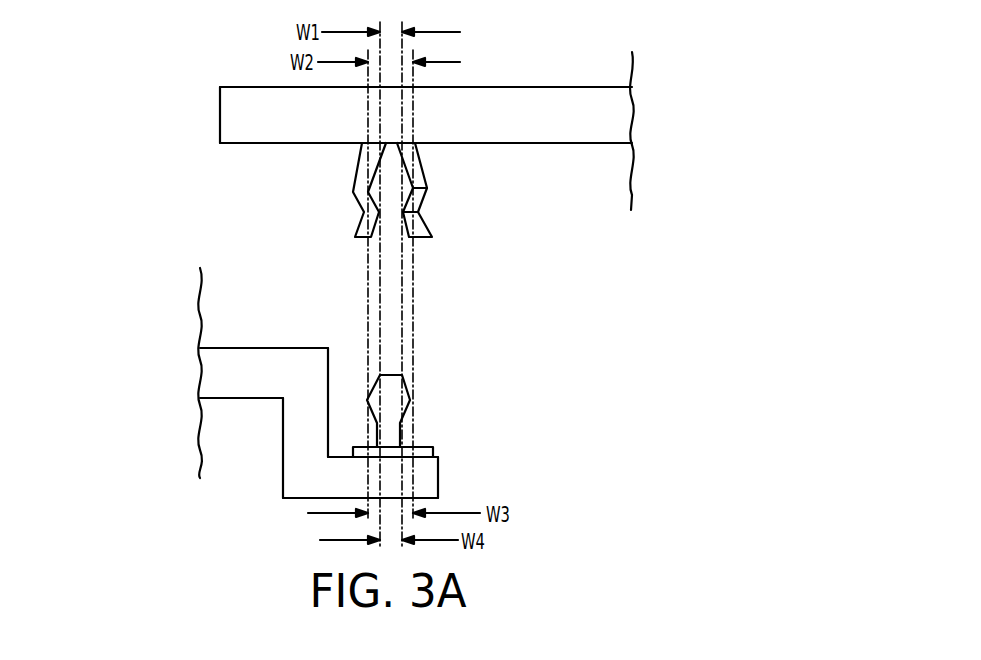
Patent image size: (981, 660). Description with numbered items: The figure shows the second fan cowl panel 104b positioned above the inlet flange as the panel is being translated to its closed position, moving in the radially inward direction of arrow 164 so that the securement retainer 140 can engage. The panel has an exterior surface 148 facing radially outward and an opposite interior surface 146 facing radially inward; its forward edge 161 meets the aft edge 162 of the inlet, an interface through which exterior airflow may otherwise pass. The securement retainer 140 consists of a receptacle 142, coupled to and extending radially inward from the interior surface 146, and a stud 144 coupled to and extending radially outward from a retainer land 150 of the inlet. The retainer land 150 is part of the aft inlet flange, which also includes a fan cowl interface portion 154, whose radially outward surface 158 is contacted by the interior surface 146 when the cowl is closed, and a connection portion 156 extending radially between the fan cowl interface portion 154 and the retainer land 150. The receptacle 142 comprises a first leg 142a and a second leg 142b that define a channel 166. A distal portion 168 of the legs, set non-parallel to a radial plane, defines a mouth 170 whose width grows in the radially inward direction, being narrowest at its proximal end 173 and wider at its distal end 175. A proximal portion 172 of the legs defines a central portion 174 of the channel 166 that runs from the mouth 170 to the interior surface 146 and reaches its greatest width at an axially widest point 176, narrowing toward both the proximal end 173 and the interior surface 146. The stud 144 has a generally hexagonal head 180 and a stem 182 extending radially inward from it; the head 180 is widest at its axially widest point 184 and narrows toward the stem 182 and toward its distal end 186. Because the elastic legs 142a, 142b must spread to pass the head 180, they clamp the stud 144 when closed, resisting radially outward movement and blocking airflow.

The second fan cowl panel 104b is at (427, 120).
The exterior surface 148 is at (598, 88).
The interior surface 146 is at (595, 143).
The forward edge 161 is at (206, 108).
The arrow 164 is at (645, 394).
The securement retainer 140 is at (515, 275).
The receptacle 142 is at (383, 201).
The first leg 142a is at (424, 168).
The second leg 142b is at (362, 150).
The axially widest point 176 is at (425, 189).
The proximal end 173 is at (418, 213).
The proximal portion 172 is at (295, 177).
The central portion 174 is at (335, 145).
The distal portion 168 is at (295, 225).
The mouth 170 is at (335, 212).
The channel 166 is at (380, 240).
The distal end 175 is at (408, 237).
The stud 144 is at (439, 374).
The distal end 186 is at (387, 375).
The head 180 is at (399, 388).
The axially widest point 184 is at (409, 400).
The stem 182 is at (392, 430).
The retainer land 150 is at (292, 383).
The radially outward surface 158 is at (240, 350).
The aft edge 162 is at (344, 375).
The fan cowl interface portion 154 is at (247, 385).
The connection portion 156 is at (298, 428).